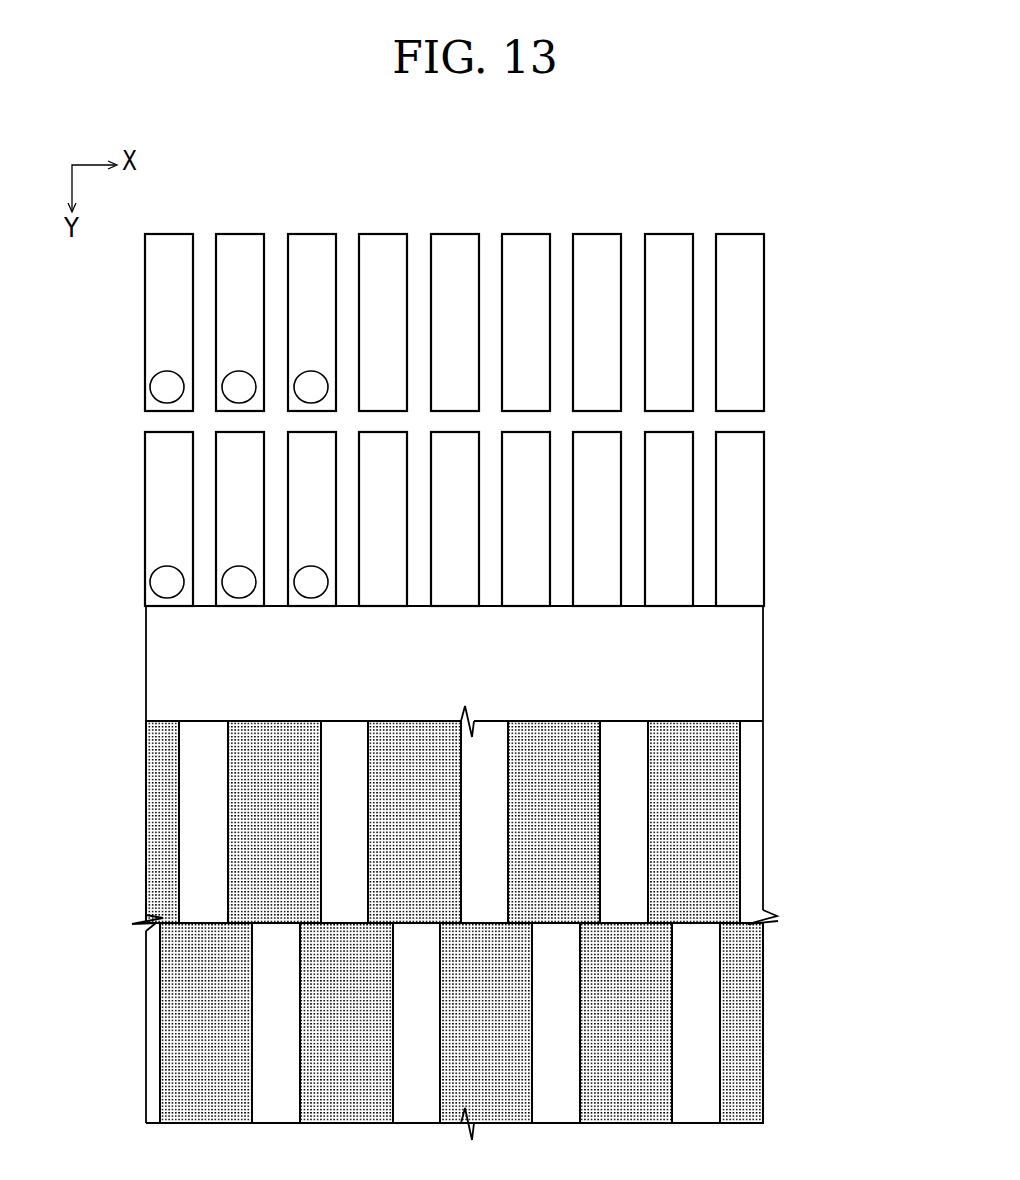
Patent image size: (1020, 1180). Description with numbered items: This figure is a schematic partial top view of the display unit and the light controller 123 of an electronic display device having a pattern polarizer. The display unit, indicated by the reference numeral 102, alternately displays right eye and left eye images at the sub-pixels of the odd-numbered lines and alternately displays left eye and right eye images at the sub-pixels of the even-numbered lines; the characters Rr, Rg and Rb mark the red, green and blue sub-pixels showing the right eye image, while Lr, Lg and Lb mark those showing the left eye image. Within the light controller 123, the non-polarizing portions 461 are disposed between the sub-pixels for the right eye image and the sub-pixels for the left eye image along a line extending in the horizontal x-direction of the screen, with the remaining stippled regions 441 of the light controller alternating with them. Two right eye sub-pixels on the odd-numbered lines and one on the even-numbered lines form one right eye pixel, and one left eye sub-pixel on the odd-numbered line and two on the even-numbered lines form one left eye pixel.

The display panel 102 is at (795, 291).
The light controller 123 is at (505, 873).
The first electrodes 441 is at (715, 843).
The non-polarizing portions 461 is at (713, 1017).